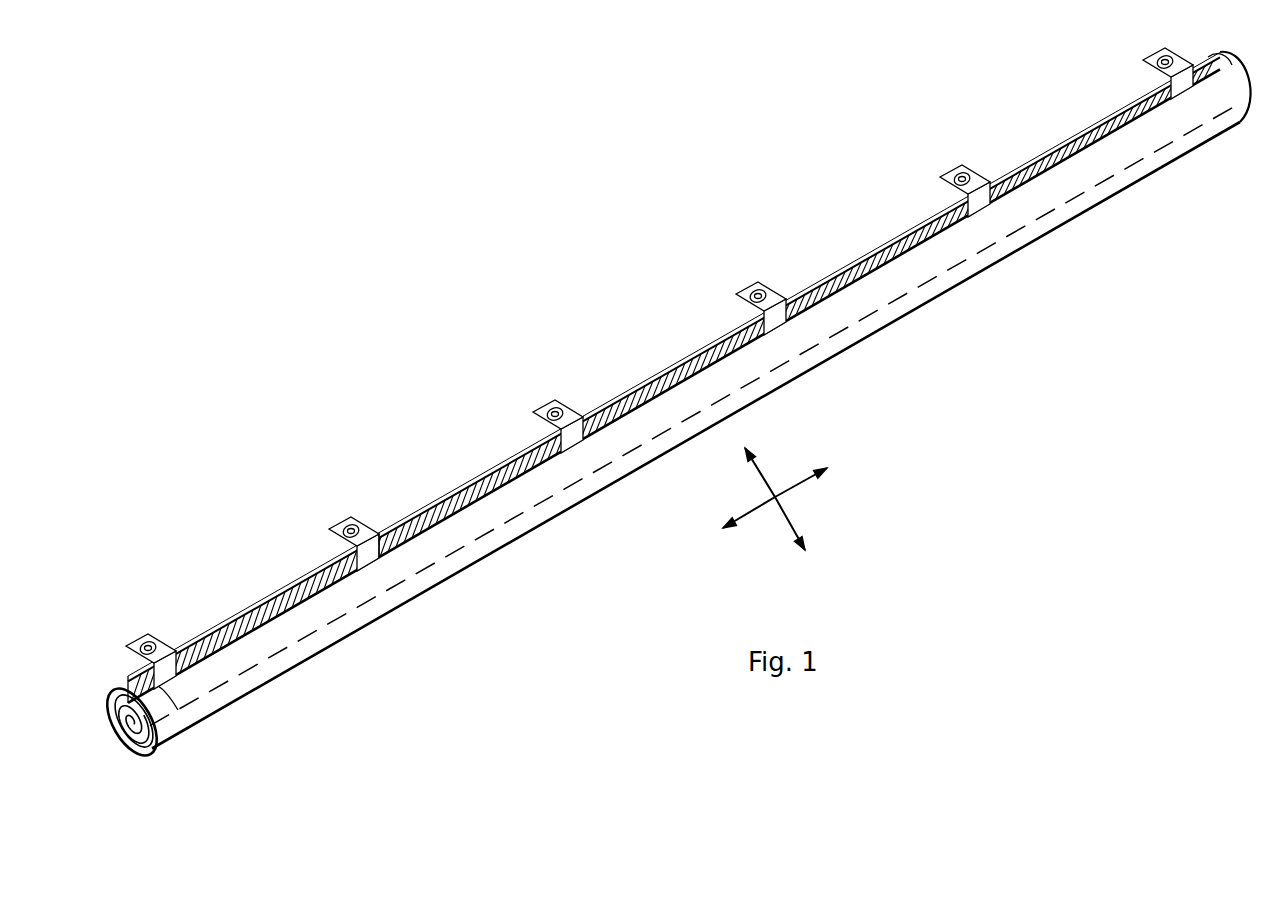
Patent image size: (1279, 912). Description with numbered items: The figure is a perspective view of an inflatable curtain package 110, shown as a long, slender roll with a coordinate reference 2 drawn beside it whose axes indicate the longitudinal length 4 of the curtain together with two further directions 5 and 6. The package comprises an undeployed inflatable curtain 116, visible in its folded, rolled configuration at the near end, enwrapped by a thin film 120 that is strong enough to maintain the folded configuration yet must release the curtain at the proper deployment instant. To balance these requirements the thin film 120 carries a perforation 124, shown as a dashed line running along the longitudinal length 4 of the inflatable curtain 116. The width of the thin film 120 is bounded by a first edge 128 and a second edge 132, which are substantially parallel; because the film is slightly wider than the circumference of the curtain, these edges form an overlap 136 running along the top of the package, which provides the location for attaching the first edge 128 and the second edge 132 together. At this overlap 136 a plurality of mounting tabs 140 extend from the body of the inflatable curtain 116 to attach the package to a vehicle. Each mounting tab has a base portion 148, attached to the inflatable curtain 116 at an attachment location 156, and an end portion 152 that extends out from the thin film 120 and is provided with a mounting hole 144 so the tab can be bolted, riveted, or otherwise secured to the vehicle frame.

The inflatable curtain package 110 is at (1104, 267).
The inflatable curtain 116 is at (124, 746).
The thin film 120 is at (1230, 92).
The perforation 124 is at (278, 653).
The first edge 128 is at (160, 687).
The second edge 132 is at (132, 677).
The overlap 136 is at (525, 474).
The mounting tabs 140 is at (1137, 63).
The mounting holes 144 is at (742, 292).
The base portion 148 is at (358, 553).
The end portion 152 is at (331, 528).
The attachment location 156 is at (380, 560).
The coordinate system 2 is at (842, 540).
The longitudinal length 4 is at (805, 483).
The axis 5 is at (775, 505).
The axis 6 is at (760, 468).